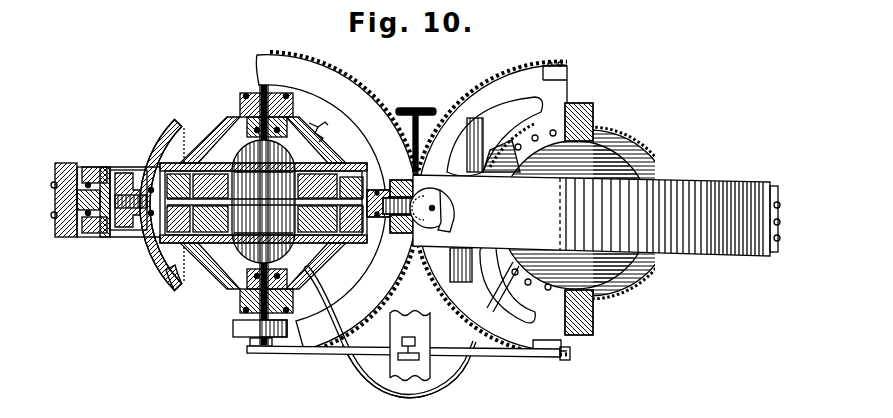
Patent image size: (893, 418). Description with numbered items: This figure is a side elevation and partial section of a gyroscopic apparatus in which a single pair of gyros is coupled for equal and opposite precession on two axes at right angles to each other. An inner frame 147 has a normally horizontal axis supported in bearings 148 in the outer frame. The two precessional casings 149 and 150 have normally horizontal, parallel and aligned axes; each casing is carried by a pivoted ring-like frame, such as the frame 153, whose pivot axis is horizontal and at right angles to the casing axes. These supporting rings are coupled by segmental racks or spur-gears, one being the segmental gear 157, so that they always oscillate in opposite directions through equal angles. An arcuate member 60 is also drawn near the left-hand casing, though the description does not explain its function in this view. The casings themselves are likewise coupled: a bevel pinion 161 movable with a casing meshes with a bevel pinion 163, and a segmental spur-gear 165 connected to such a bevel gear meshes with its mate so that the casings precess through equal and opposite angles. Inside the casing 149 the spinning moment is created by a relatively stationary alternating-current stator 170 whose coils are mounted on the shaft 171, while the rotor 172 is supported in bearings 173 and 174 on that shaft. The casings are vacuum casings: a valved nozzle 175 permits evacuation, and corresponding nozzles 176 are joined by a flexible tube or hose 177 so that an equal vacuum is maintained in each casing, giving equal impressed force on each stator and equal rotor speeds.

The bearings 148 is at (89, 170).
The arcuate arm 60 is at (148, 199).
The precessional casing 149 is at (228, 128).
The bearing 173 is at (255, 125).
The segmental rack or spur-gear 157 is at (338, 86).
The segmental spur-gear 165 is at (507, 72).
The bevel pinion 161 is at (483, 137).
The precessional casing 150 is at (598, 112).
The bevel pinion 163 is at (637, 150).
The valved nozzle 175 is at (322, 137).
The nozzle 176 is at (310, 268).
The inner frame 147 is at (104, 237).
The frame 153 is at (119, 230).
The rotor 172 is at (165, 277).
The A. C. stator 170 is at (248, 240).
The bearing 174 is at (240, 313).
The shaft 171 is at (250, 318).
The flexible tube or hose 177 is at (364, 384).